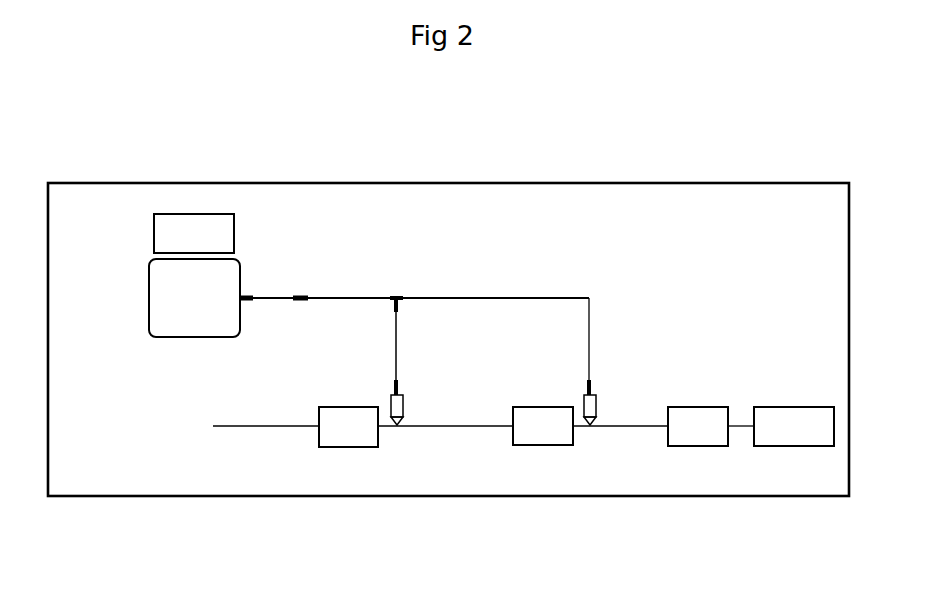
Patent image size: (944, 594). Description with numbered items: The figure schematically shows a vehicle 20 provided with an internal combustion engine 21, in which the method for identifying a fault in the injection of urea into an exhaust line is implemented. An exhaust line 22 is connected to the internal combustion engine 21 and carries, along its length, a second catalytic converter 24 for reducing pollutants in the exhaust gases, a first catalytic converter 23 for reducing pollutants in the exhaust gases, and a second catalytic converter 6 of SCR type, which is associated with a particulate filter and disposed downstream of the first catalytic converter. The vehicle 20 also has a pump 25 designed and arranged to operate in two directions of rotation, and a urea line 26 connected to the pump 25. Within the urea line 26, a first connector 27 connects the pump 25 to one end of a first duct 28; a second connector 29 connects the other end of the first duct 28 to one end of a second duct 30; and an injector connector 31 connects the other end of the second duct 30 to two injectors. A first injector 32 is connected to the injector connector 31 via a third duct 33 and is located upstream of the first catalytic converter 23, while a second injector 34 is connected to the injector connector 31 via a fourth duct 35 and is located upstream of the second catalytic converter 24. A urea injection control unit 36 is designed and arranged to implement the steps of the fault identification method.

The vehicle 20 is at (463, 175).
The urea line 26 is at (527, 225).
The urea injection control unit 36 is at (194, 233).
The pump 25 is at (194, 298).
The first connector 27 is at (247, 291).
The first duct 28 is at (276, 302).
The second connector 29 is at (307, 291).
The second duct 30 is at (346, 302).
The injector connector 31 is at (401, 292).
The fourth duct 35 is at (399, 340).
The third duct 33 is at (533, 302).
The second injector 34 is at (408, 398).
The first injector 32 is at (601, 396).
The exhaust line 22 is at (450, 462).
The second catalytic converter 24 is at (348, 427).
The first catalytic converter 23 is at (543, 426).
The second catalytic converter of SCR type 6 is at (698, 426).
The internal combustion engine 21 is at (794, 426).